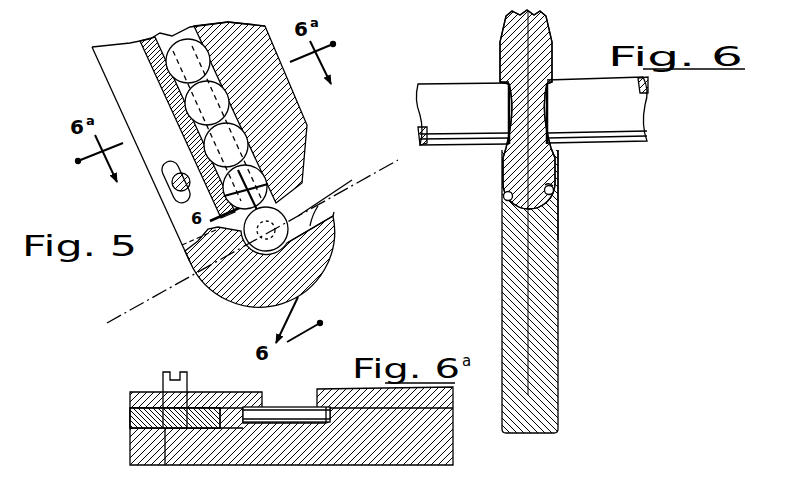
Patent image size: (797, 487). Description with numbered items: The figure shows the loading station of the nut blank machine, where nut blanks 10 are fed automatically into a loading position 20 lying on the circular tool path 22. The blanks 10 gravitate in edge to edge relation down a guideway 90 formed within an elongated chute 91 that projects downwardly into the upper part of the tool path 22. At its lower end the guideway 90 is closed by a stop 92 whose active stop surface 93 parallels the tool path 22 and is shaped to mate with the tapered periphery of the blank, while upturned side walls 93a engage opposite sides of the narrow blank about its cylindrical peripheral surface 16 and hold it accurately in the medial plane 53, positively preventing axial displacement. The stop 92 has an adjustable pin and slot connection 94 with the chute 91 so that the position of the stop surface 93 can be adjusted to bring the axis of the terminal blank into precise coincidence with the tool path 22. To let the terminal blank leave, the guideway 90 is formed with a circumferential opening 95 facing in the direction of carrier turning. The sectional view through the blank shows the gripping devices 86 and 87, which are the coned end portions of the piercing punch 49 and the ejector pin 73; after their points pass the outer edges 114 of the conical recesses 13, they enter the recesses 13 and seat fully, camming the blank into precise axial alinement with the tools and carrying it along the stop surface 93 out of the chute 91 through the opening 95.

In FIG. 5, the nut blank 10 is at (281, 212).
In FIG. 6A, the nut blank 10 is at (288, 409).
In FIG. 6, the conical recess 13 is at (545, 97).
In FIG. 6, the cylindrical peripheral surface 16 is at (541, 15).
In FIG. 5, the loading position 20 is at (259, 251).
In FIG. 5, the circular tool path 22 is at (144, 301).
In FIG. 6, the piercing punch 49 is at (619, 140).
In FIG. 6, the medial plane 53 is at (534, 318).
In FIG. 6, the ejector pin 73 is at (456, 146).
In FIG. 6, the gripping device 86 is at (511, 116).
In FIG. 6, the gripping device 87 is at (546, 109).
In FIG. 5, the guideway 90 is at (177, 101).
In FIG. 6A, the guideway 90 is at (324, 424).
In FIG. 5, the chute 91 is at (305, 103).
In FIG. 6A, the chute 91 is at (303, 459).
In FIG. 5, the stop 92 is at (330, 272).
In FIG. 6, the stop 92 is at (559, 231).
In FIG. 6A, the stop 92 is at (133, 416).
In FIG. 5, the stop surface 93 is at (333, 218).
In FIG. 6, the stop surface 93 is at (553, 187).
In FIG. 5, the upturned side wall 93a is at (342, 190).
In FIG. 6, the upturned side wall 93a is at (506, 195).
In FIG. 5, the pin and slot connection 94 is at (166, 188).
In FIG. 6A, the pin and slot connection 94 is at (153, 389).
In FIG. 5, the circumferential opening 95 is at (312, 203).
In FIG. 6, the outer edge of recess 114 is at (499, 57).